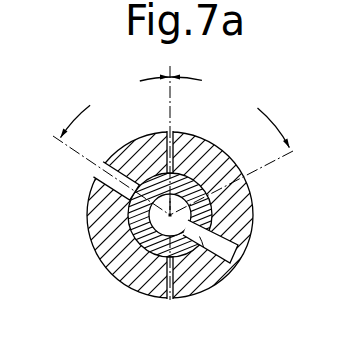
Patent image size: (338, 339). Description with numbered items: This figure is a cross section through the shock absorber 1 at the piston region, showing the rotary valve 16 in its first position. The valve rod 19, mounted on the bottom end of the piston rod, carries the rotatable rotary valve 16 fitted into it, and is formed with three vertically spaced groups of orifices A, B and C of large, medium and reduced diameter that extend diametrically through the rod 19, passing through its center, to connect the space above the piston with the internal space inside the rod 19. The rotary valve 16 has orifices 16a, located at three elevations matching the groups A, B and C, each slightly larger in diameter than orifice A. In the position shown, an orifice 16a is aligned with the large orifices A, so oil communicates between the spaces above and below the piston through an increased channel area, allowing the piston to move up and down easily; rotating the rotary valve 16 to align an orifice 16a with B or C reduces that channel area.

The coupling 1 is at (181, 169).
The rotary valve 16 is at (212, 212).
The orifices 16a is at (106, 206).
The valve rod 19 is at (140, 282).